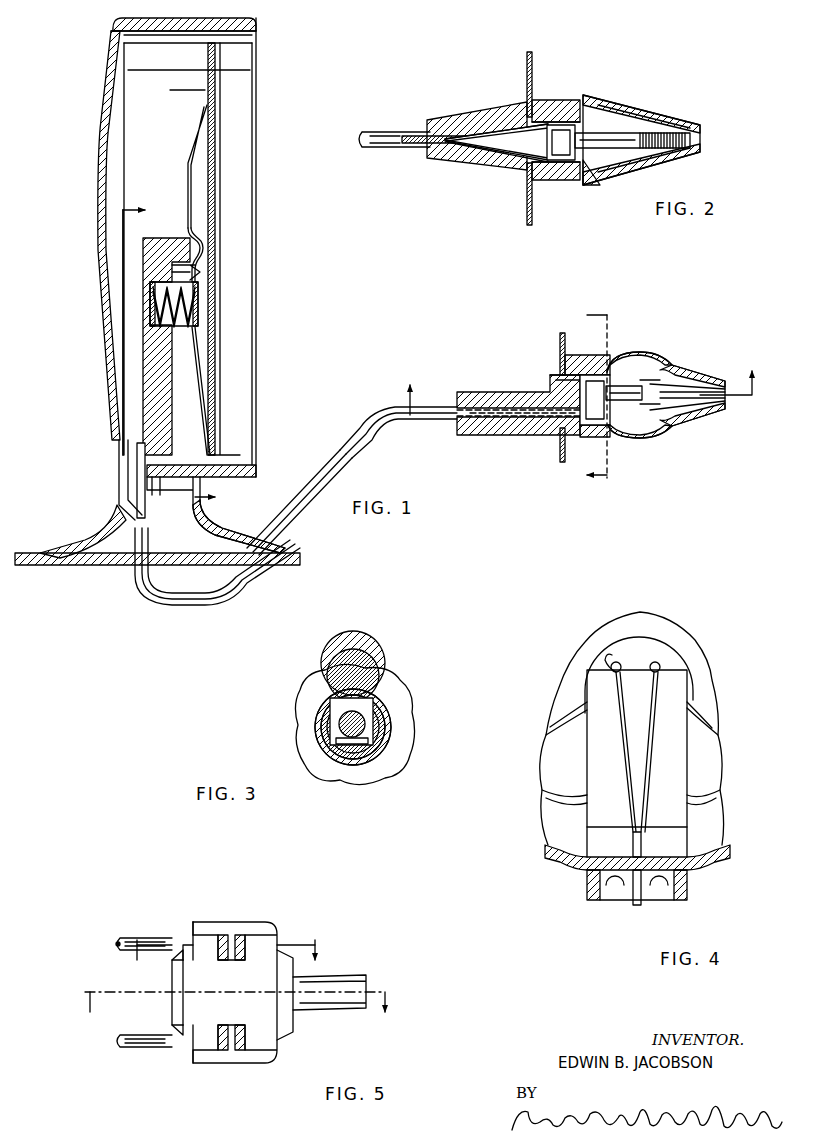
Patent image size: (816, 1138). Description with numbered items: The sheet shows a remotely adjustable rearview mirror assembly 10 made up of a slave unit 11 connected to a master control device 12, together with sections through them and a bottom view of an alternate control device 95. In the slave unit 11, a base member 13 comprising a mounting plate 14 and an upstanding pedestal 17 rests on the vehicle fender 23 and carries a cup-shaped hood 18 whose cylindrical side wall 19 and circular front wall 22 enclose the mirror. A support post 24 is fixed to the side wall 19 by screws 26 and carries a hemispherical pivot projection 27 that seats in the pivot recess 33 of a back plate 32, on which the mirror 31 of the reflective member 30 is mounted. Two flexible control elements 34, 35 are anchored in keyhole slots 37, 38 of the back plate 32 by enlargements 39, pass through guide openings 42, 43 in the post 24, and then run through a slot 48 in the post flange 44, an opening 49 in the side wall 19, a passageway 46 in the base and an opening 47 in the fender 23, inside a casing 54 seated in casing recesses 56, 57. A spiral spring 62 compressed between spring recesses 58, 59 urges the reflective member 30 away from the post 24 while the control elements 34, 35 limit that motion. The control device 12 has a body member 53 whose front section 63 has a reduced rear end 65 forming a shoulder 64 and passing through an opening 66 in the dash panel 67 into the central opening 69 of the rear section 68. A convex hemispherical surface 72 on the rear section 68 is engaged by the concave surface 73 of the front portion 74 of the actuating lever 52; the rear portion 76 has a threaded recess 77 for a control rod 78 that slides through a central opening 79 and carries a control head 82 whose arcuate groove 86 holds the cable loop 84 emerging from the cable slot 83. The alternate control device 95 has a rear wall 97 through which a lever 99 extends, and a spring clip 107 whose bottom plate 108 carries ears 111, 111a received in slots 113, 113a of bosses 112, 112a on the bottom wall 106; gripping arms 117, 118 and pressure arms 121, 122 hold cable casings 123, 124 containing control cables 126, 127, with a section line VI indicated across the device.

In FIG. 1, the rearview mirror assembly 10 is at (285, 88).
In FIG. 1, the slave unit 11 is at (103, 372).
In FIG. 1, the control device 12 is at (655, 330).
In FIG. 2, the control device 12 is at (655, 172).
In FIG. 1, the base member 13 is at (70, 540).
In FIG. 1, the mounting plate 14 is at (108, 538).
In FIG. 1, the pedestal 17 is at (125, 503).
In FIG. 4, the pedestal 17 is at (590, 885).
In FIG. 1, the hood 18 is at (165, 17).
In FIG. 1, the side wall 19 is at (189, 88).
In FIG. 4, the side wall 19 is at (715, 860).
In FIG. 1, the front wall 22 is at (113, 62).
In FIG. 1, the fender 23 is at (25, 553).
In FIG. 1, the support post 24 is at (128, 438).
In FIG. 4, the support post 24 is at (668, 785).
In FIG. 1, the screws 26 is at (152, 490).
In FIG. 4, the screws 26 is at (616, 888).
In FIG. 1, the pivot projection 27 is at (135, 228).
In FIG. 1, the reflective member 30 is at (224, 78).
In FIG. 4, the reflective member 30 is at (680, 605).
In FIG. 1, the mirror 31 is at (216, 108).
In FIG. 1, the back plate 32 is at (200, 130).
In FIG. 4, the back plate 32 is at (695, 675).
In FIG. 1, the pivot recess 33 is at (196, 233).
In FIG. 1, the control element 34 is at (142, 395).
In FIG. 2, the control element 34 is at (490, 128).
In FIG. 4, the control element 34 is at (628, 760).
In FIG. 1, the control element 35 is at (352, 450).
In FIG. 2, the control element 35 is at (470, 150).
In FIG. 4, the control element 35 is at (650, 715).
In FIG. 4, the keyhole-shaped slot 37 is at (608, 655).
In FIG. 4, the keyhole-shaped slot 38 is at (662, 665).
In FIG. 1, the enlargements 39 is at (196, 268).
In FIG. 4, the guide opening 42 is at (617, 667).
In FIG. 4, the guide opening 43 is at (657, 662).
In FIG. 1, the flange 44 is at (138, 452).
In FIG. 4, the flange 44 is at (660, 840).
In FIG. 1, the passageway 46 is at (172, 540).
In FIG. 4, the passageway 46 is at (658, 890).
In FIG. 1, the opening 47 is at (140, 578).
In FIG. 1, the slot 48 is at (137, 470).
In FIG. 4, the slot 48 is at (633, 840).
In FIG. 1, the opening 49 is at (150, 463).
In FIG. 1, the actuating lever 52 is at (690, 373).
In FIG. 2, the actuating lever 52 is at (665, 105).
In FIG. 1, the body member 53 is at (600, 437).
In FIG. 2, the body member 53 is at (520, 100).
In FIG. 1, the casing 54 is at (298, 505).
In FIG. 2, the casing 54 is at (392, 132).
In FIG. 1, the casing recess 56 is at (150, 460).
In FIG. 1, the casing recess 57 is at (465, 435).
In FIG. 2, the casing recess 57 is at (435, 136).
In FIG. 1, the spring recess 58 is at (198, 292).
In FIG. 1, the spring recess 59 is at (150, 312).
In FIG. 1, the spiral spring 62 is at (150, 298).
In FIG. 1, the front section 63 is at (500, 396).
In FIG. 2, the front section 63 is at (493, 165).
In FIG. 1, the shoulder 64 is at (552, 440).
In FIG. 2, the shoulder 64 is at (528, 170).
In FIG. 1, the rear end 65 is at (586, 370).
In FIG. 2, the rear end 65 is at (556, 100).
In FIG. 1, the opening 66 is at (566, 374).
In FIG. 2, the opening 66 is at (542, 112).
In FIG. 1, the dash panel 67 is at (560, 339).
In FIG. 2, the dash panel 67 is at (534, 55).
In FIG. 3, the dash panel 67 is at (387, 770).
In FIG. 1, the rear section 68 is at (575, 358).
In FIG. 2, the rear section 68 is at (570, 180).
In FIG. 3, the rear section 68 is at (358, 690).
In FIG. 1, the central opening 69 is at (542, 432).
In FIG. 2, the central opening 69 is at (552, 180).
In FIG. 3, the central opening 69 is at (370, 705).
In FIG. 1, the hemispherical convex surface 72 is at (620, 360).
In FIG. 2, the hemispherical convex surface 72 is at (600, 105).
In FIG. 1, the concave surface 73 is at (640, 366).
In FIG. 2, the concave surface 73 is at (590, 180).
In FIG. 1, the front portion 74 is at (640, 432).
In FIG. 2, the front portion 74 is at (625, 125).
In FIG. 1, the rear portion 76 is at (700, 412).
In FIG. 2, the rear portion 76 is at (700, 125).
In FIG. 2, the threaded recess 77 is at (692, 150).
In FIG. 1, the control rod 78 is at (612, 392).
In FIG. 2, the control rod 78 is at (692, 140).
In FIG. 3, the control rod 78 is at (340, 722).
In FIG. 2, the central opening 79 is at (610, 165).
In FIG. 1, the control head 82 is at (592, 392).
In FIG. 2, the control head 82 is at (552, 134).
In FIG. 3, the control head 82 is at (335, 735).
In FIG. 1, the cable slot 83 is at (462, 407).
In FIG. 2, the cable slot 83 is at (480, 150).
In FIG. 1, the loop 84 is at (498, 425).
In FIG. 2, the loop 84 is at (562, 122).
In FIG. 3, the loop 84 is at (368, 738).
In FIG. 1, the arcuate groove 86 is at (582, 440).
In FIG. 3, the arcuate groove 86 is at (330, 758).
In FIG. 5, the control device 95 is at (295, 925).
In FIG. 5, the rear wall 97 is at (285, 935).
In FIG. 5, the lever 99 is at (358, 982).
In FIG. 5, the bottom wall 106 is at (222, 925).
In FIG. 5, the spring clip 107 is at (172, 977).
In FIG. 5, the bottom plate 108 is at (235, 992).
In FIG. 5, the ear 111 is at (255, 950).
In FIG. 5, the ear 111a is at (260, 1045).
In FIG. 5, the boss 112 is at (232, 935).
In FIG. 5, the boss 112a is at (228, 1050).
In FIG. 5, the slot 113 is at (242, 935).
In FIG. 5, the slot 113a is at (242, 1048).
In FIG. 5, the gripping arm 117 is at (188, 945).
In FIG. 5, the gripping arm 118 is at (200, 1045).
In FIG. 5, the pressure arm 121 is at (178, 952).
In FIG. 5, the pressure arm 122 is at (180, 1038).
In FIG. 5, the cable casing 123 is at (125, 938).
In FIG. 5, the cable casing 124 is at (135, 1050).
In FIG. 5, the control cable 126 is at (117, 947).
In FIG. 5, the control cable 127 is at (117, 1040).
In FIG. 5, the section line VI is at (233, 990).